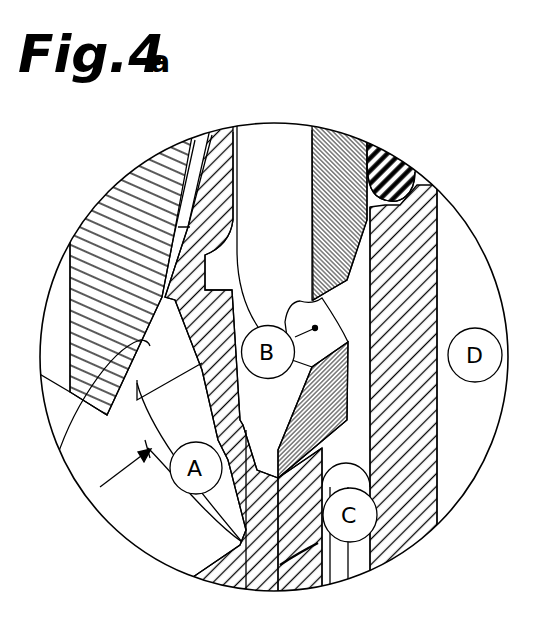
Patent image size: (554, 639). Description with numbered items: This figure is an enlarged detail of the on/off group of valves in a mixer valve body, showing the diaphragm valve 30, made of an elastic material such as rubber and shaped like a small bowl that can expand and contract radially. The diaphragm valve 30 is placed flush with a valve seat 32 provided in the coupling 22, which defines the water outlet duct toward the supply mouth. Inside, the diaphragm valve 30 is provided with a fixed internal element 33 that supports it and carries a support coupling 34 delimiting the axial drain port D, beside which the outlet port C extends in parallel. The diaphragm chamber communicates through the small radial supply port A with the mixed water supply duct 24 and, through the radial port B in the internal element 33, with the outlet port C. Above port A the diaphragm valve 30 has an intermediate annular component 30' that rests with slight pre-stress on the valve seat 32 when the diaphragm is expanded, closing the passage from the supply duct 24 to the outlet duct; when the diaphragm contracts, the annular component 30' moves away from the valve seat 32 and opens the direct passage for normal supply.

The coupling 22 is at (93, 257).
The intermediate annular component 30' is at (175, 360).
The fixed internal element 33 is at (333, 152).
The valve seat 32 is at (89, 422).
The diaphragm valve 30 is at (150, 457).
The mixed water supply duct 24 is at (146, 456).
The support coupling 34 is at (413, 472).